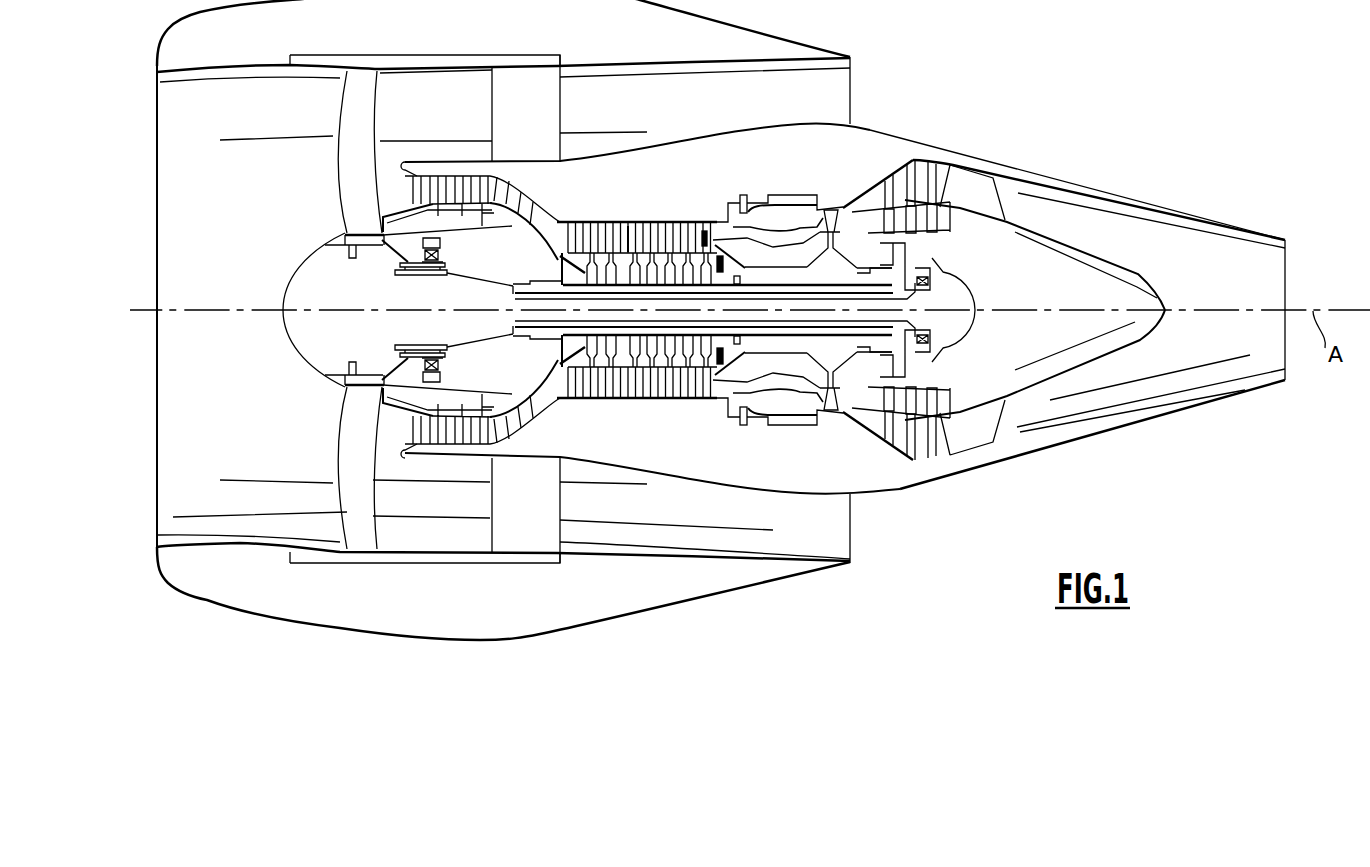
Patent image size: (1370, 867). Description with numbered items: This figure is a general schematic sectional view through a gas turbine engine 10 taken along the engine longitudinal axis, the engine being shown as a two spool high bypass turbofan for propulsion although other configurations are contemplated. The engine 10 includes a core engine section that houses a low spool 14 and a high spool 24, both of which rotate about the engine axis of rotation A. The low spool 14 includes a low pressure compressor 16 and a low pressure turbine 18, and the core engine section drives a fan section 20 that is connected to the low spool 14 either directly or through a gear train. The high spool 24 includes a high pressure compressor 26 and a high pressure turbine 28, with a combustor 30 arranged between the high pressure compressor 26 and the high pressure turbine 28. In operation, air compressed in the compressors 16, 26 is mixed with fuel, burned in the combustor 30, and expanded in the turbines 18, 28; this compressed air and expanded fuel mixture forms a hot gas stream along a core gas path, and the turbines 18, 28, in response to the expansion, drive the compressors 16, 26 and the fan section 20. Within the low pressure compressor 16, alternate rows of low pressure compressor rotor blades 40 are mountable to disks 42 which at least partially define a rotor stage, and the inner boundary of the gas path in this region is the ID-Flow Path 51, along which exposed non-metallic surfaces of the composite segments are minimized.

The gas turbine engine 10 is at (750, 320).
The low spool 14 is at (568, 278).
The low pressure compressor 16 is at (458, 447).
The low pressure turbine 18 is at (909, 462).
The fan section 20 is at (355, 468).
The high spool 24 is at (770, 285).
The high pressure compressor 26 is at (660, 403).
The high pressure turbine 28 is at (836, 417).
The combustor 30 is at (780, 390).
The low pressure compressor rotor blades 40 is at (632, 235).
The disks 42 is at (703, 230).
The ID-Flow Path 51 is at (558, 263).